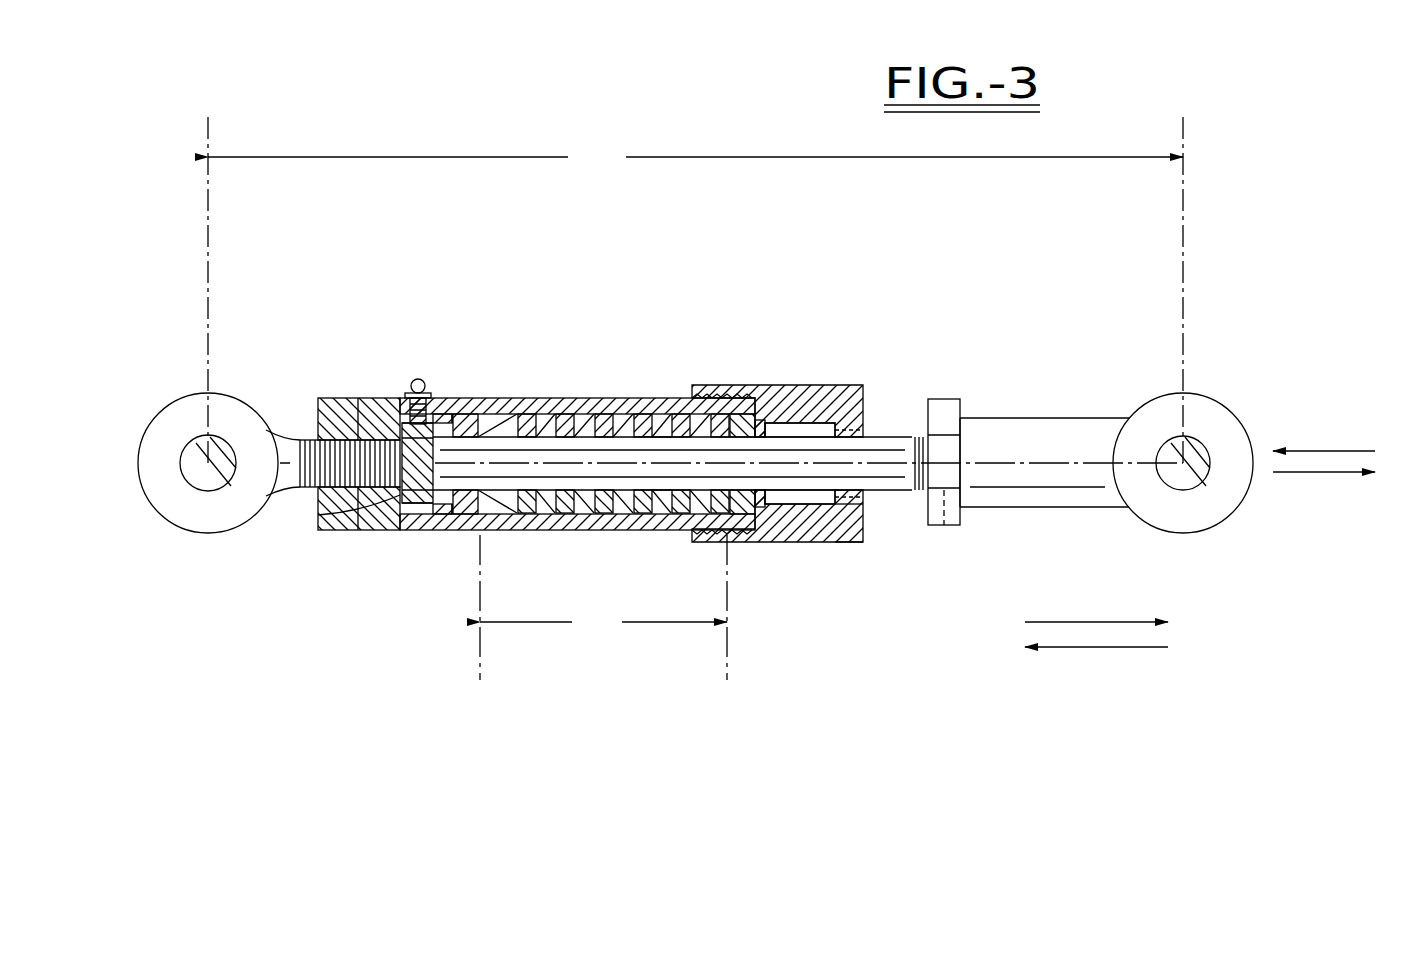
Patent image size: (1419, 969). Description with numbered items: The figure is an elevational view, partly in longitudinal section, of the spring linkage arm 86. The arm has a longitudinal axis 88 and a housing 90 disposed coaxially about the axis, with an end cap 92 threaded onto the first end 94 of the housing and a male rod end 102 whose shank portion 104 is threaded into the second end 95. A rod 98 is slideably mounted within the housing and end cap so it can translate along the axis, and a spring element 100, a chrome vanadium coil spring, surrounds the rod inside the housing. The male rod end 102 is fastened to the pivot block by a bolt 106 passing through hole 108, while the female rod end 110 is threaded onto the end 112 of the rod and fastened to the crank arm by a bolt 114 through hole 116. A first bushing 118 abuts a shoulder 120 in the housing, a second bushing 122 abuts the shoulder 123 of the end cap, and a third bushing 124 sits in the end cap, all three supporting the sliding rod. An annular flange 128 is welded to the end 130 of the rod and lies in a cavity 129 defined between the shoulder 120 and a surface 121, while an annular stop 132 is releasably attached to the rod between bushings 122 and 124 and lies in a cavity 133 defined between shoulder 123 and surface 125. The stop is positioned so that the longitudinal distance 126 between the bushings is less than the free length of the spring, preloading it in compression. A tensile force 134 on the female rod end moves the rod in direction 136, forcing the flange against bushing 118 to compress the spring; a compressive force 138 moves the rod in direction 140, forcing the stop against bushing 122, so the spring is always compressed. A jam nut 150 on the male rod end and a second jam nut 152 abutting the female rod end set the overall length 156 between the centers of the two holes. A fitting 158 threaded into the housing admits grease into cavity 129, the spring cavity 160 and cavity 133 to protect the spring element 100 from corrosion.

The spring linkage arm 86 is at (495, 298).
The longitudinal axis 88 is at (1060, 490).
The housing 90 is at (553, 437).
The end cap 92 is at (815, 385).
The first end of housing 94 is at (702, 531).
The second end of housing 95 is at (365, 400).
The rod 98 is at (893, 437).
The spring element 100 is at (572, 414).
The male rod end 102 is at (206, 393).
The shank portion 104 is at (350, 398).
The bolt 106 is at (184, 452).
The hole 108 is at (184, 474).
The female rod end 110 is at (1200, 395).
The end of rod 112 is at (942, 525).
The bolt 114 is at (1176, 440).
The hole 116 is at (1196, 480).
The first bushing 118 is at (470, 515).
The shoulder 120 is at (418, 504).
The surface 121 is at (405, 520).
The second bushing 122 is at (742, 520).
The shoulder of end cap 123 is at (742, 535).
The third bushing 124 is at (862, 520).
The surface 125 is at (850, 542).
The longitudinal distance 126 is at (603, 607).
The annular flange 128 is at (458, 414).
The cavity 129 is at (420, 503).
The end of rod 130 is at (318, 524).
The annular stop 132 is at (770, 425).
The cavity 133 is at (795, 428).
The tensile force 134 is at (1345, 472).
The direction 136 is at (1070, 622).
The compressive force 138 is at (1345, 451).
The direction 140 is at (1115, 647).
The jam nut 150 is at (318, 405).
The second jam nut 152 is at (963, 418).
The overall length 156 is at (695, 157).
The fitting 158 is at (418, 378).
The cavity 160 is at (664, 425).